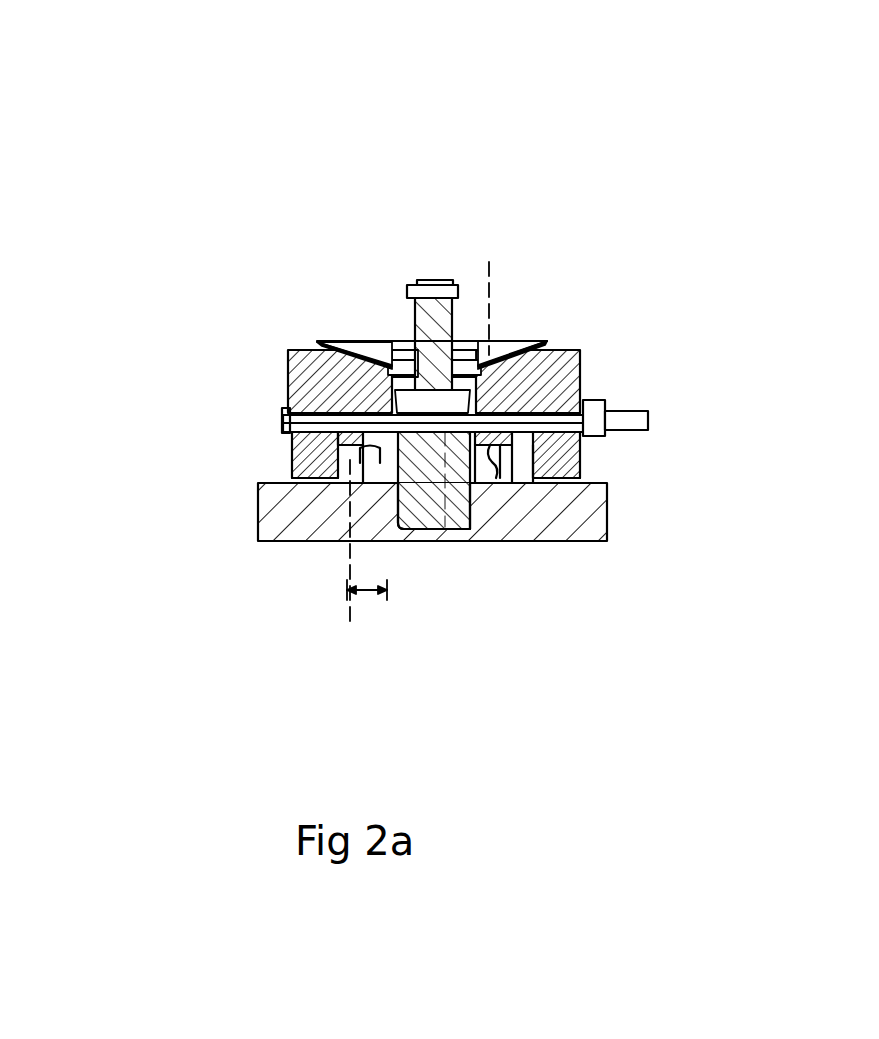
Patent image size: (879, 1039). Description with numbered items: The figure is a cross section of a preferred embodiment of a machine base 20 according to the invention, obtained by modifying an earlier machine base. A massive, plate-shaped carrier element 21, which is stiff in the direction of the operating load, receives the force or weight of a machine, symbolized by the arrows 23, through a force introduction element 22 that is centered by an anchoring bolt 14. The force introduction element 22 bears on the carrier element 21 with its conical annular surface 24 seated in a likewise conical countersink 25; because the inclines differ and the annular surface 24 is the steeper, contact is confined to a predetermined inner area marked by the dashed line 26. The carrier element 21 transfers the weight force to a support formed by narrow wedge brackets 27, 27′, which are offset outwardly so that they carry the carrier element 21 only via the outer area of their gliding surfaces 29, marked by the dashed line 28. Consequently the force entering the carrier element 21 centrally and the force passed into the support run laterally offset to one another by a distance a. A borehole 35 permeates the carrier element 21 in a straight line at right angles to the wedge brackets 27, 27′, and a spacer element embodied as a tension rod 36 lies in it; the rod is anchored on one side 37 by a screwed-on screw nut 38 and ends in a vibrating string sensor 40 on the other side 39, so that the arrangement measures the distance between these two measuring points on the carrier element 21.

The anchoring bolt 14 is at (428, 280).
The machine base 20 is at (664, 110).
The carrier element 21 is at (582, 363).
The force introduction element 22 is at (517, 340).
The arrows 23 is at (350, 264).
The conical annular surface 24 is at (358, 337).
The conical countersink 25 is at (287, 382).
The dashed line 26 is at (378, 212).
The wedge bracket 27 is at (352, 484).
The wedge bracket 27′ is at (583, 472).
The dashed line 28 is at (568, 573).
The gliding surfaces 29 is at (292, 466).
The borehole 35 is at (287, 393).
The tension rod 36 is at (468, 428).
The one side 37 is at (205, 447).
The screw nut 38 is at (287, 437).
The other side 39 is at (636, 385).
The vibrating string sensor 40 is at (660, 403).
The distance a is at (362, 595).